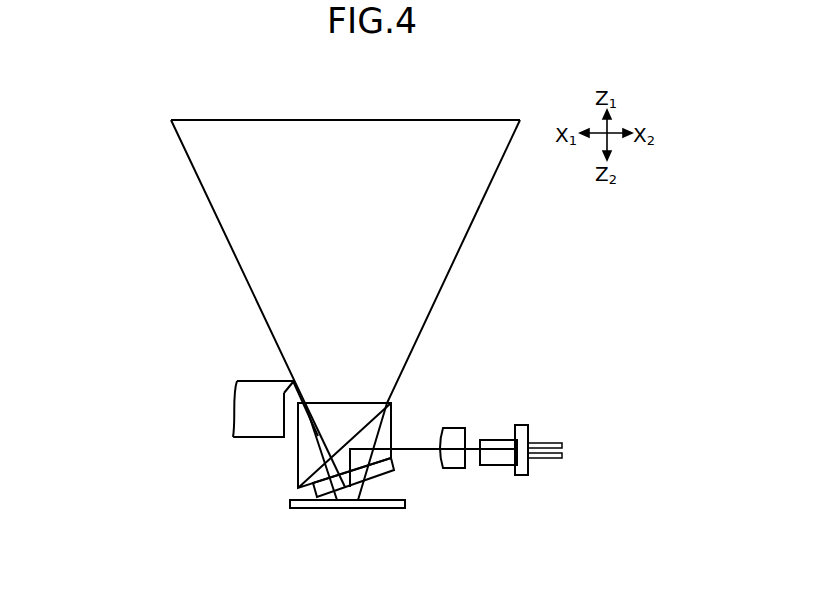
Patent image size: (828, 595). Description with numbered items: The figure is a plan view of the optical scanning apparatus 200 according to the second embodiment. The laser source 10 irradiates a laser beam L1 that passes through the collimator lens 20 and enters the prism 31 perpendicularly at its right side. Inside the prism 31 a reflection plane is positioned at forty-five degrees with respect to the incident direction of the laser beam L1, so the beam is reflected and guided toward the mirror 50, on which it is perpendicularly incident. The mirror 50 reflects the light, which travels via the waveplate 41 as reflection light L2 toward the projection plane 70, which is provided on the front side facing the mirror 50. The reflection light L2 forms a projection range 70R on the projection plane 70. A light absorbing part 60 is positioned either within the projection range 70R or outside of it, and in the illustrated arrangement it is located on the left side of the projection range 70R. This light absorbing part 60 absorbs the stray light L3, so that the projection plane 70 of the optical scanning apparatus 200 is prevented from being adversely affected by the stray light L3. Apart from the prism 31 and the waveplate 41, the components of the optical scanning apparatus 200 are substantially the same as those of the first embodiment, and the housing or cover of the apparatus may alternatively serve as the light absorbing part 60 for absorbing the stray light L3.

The optical scanning apparatus 200 is at (171, 80).
The projection plane 70 is at (365, 119).
The projection range 70R is at (460, 193).
The reflection light L2 is at (460, 247).
The light absorbing part 60 is at (248, 379).
The prism 31 is at (392, 412).
The stray light L3 is at (330, 443).
The waveplate 41 is at (393, 470).
The laser beam L1 is at (420, 451).
The collimator lens 20 is at (455, 427).
The laser source 10 is at (500, 441).
The mirror 50 is at (288, 502).